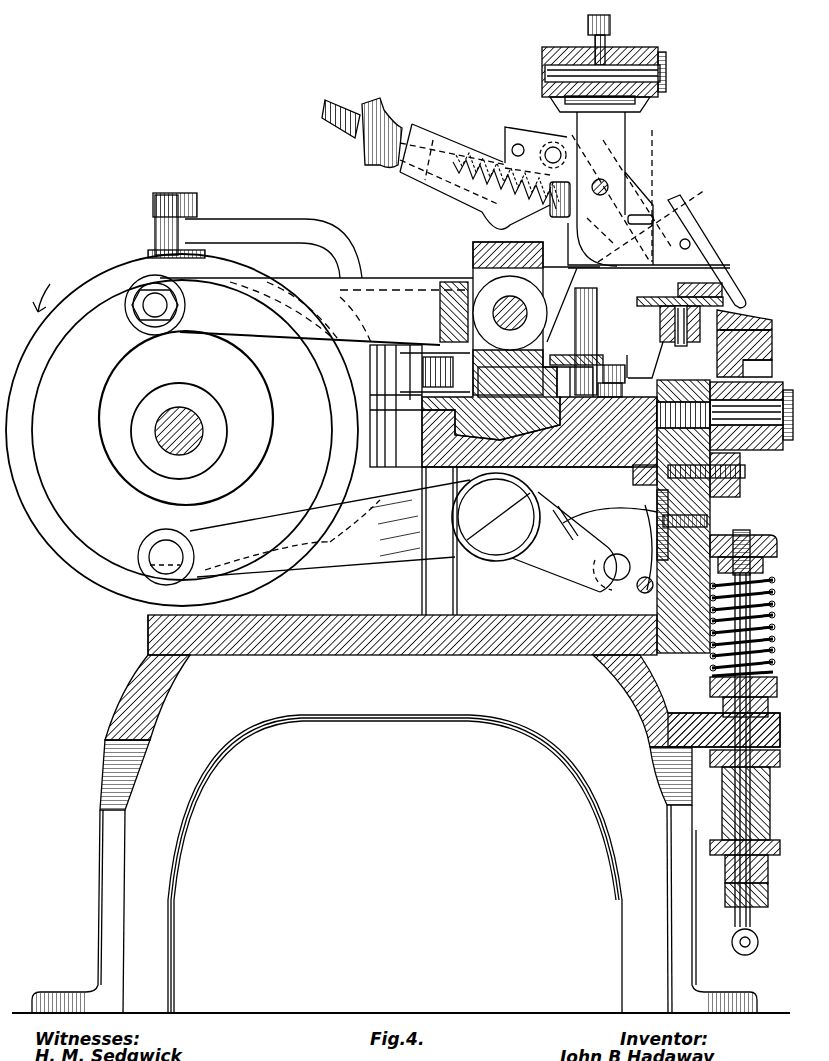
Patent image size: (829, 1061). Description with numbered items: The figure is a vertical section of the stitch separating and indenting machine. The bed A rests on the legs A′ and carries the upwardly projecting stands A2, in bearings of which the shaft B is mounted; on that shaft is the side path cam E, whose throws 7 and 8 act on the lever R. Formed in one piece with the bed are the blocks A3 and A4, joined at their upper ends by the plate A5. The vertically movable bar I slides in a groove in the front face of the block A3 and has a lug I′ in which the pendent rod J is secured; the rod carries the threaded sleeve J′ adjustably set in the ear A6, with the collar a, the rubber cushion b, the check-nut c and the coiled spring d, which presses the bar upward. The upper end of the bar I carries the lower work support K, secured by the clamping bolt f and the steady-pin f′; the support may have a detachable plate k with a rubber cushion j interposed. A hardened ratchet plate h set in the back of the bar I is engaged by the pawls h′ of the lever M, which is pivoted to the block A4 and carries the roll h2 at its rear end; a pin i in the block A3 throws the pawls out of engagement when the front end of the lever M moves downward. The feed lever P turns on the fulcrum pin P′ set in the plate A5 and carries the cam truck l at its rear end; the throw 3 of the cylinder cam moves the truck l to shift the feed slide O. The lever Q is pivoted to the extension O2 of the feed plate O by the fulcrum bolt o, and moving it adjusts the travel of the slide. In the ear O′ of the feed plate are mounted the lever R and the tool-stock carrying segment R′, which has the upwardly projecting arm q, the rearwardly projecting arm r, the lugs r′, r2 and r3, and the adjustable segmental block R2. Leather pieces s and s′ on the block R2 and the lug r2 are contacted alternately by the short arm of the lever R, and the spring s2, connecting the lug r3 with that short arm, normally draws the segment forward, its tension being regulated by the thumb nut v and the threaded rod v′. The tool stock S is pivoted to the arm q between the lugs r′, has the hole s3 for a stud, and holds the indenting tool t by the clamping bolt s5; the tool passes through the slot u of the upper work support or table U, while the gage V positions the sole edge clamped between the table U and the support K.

The bed A is at (470, 660).
The legs A′ is at (132, 877).
The stands A2 is at (148, 616).
The block A3 is at (590, 610).
The block A4 is at (439, 541).
The plate A5 is at (564, 458).
The ear A6 is at (780, 740).
The side path cam E is at (182, 430).
The shaft B is at (155, 432).
The throw of cam E 7 is at (70, 383).
The throw of cam E 8 is at (132, 346).
The throw of cylinder cam 3 is at (117, 306).
The fulcrum bolt o is at (496, 309).
The cam truck l is at (148, 256).
The feed lever P is at (378, 343).
The fulcrum pin P′ is at (384, 279).
The lever R is at (490, 304).
The ear of feed plate O′ is at (491, 341).
The feed plate O is at (539, 432).
The extension of feed plate O2 is at (535, 382).
The lever Q is at (603, 357).
The gage V is at (669, 337).
The upper work support or table U is at (678, 292).
The vertically movable bar I is at (672, 395).
The lug I′ is at (782, 542).
The work support K is at (753, 343).
The detachable plate k is at (760, 315).
The cushion j is at (772, 330).
The stud or clamping bolt f is at (751, 416).
The steady-pin f′ is at (750, 470).
The ratchet plate h is at (657, 503).
The pawls h′ is at (610, 547).
The pin i is at (646, 579).
The lever M is at (410, 532).
The roll h2 is at (185, 556).
The upwardly projecting arm q is at (604, 140).
The tool-stock carrying segment R′ is at (565, 196).
The segmental block R2 is at (510, 135).
The laterally projecting lugs r′ is at (559, 198).
The lug r2 is at (632, 236).
The lug r3 is at (428, 178).
The rearwardly and upwardly projecting arm r is at (447, 182).
The tool stock S is at (605, 179).
The leather piece s is at (622, 196).
The leather piece s′ is at (640, 200).
The spring s2 is at (482, 200).
The hole s3 is at (617, 209).
The clamping bolt s5 is at (685, 252).
The indenting tool t is at (707, 251).
The slot u is at (738, 290).
The thumb nut v is at (382, 133).
The threaded rod v′ is at (341, 115).
The pendent rod J is at (770, 712).
The coiled spring d is at (751, 637).
The check-nut c is at (750, 762).
The threaded sleeve J′ is at (752, 811).
The rubber cushion b is at (753, 869).
The collar a is at (737, 896).